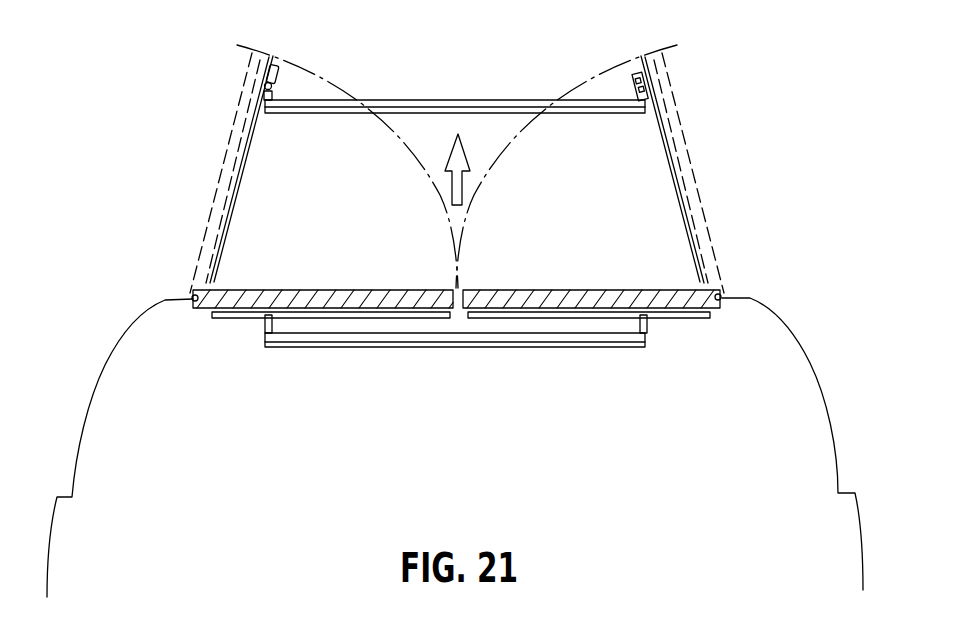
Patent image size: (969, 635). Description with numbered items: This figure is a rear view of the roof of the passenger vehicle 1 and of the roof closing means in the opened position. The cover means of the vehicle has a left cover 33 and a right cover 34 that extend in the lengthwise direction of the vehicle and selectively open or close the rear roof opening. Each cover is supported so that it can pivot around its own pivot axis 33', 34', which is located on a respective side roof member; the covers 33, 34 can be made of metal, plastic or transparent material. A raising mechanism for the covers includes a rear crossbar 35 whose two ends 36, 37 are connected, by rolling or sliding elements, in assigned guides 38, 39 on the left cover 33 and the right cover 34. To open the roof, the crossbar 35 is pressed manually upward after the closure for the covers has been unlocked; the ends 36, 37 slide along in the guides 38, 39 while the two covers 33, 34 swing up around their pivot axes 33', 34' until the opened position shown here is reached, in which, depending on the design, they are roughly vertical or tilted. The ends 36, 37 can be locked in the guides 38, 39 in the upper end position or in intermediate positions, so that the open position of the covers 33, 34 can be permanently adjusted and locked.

The passenger vehicle 1 is at (137, 324).
The left cover 33 is at (323, 182).
The right cover 34 is at (591, 182).
The pivot axis 33' is at (177, 344).
The pivot axis 34' is at (738, 343).
The rear crossbar 35 is at (498, 106).
The end 36 is at (264, 331).
The end 37 is at (648, 333).
The guide 38 is at (366, 318).
The guide 39 is at (577, 318).